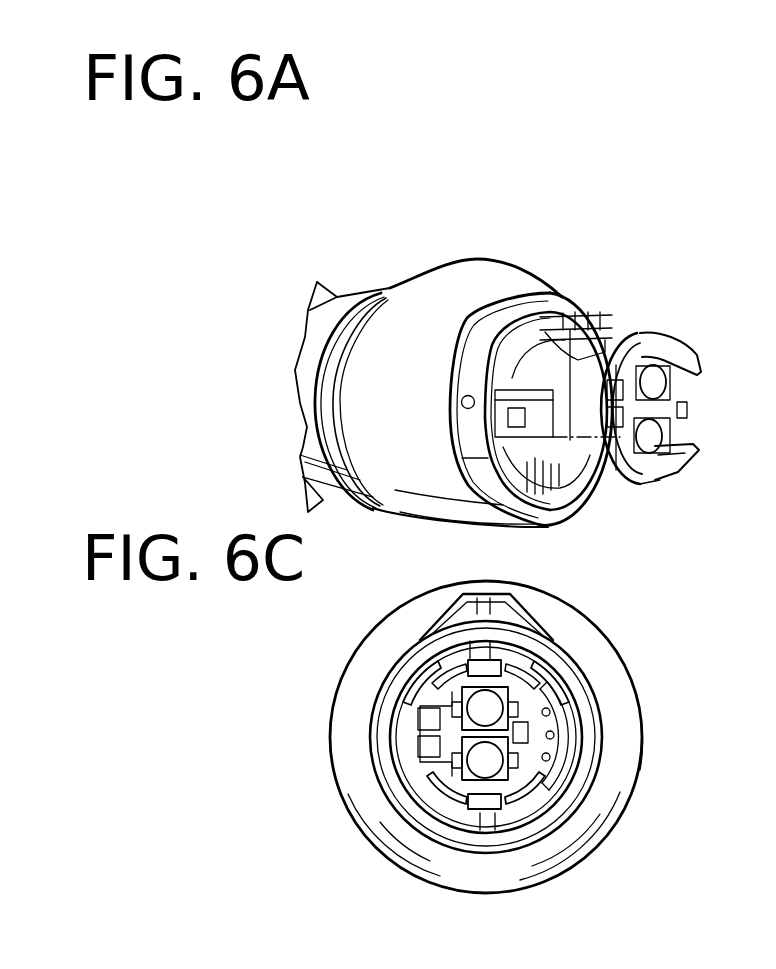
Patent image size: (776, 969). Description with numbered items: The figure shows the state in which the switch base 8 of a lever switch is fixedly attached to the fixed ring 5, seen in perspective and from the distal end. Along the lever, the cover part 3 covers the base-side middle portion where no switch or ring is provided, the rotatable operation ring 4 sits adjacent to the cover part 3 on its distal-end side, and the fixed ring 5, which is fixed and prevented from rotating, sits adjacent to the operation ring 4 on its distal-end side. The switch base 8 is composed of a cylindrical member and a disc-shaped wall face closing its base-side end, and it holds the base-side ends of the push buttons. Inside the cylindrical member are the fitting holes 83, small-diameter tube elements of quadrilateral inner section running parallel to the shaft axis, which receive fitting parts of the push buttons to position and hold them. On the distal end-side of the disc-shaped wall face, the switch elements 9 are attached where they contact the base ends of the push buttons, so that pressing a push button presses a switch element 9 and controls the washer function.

In FIG. 6A, the cover part 3 is at (333, 313).
In FIG. 6C, the cover part 3 is at (617, 697).
In FIG. 6A, the operation ring 4 is at (455, 280).
In FIG. 6C, the operation ring 4 is at (513, 610).
In FIG. 6A, the fixed ring 5 is at (572, 516).
In FIG. 6C, the fixed ring 5 is at (588, 760).
In FIG. 6A, the switch base 8 is at (652, 342).
In FIG. 6A, the switch element 9 is at (655, 382).
In FIG. 6C, the switch element 9 is at (487, 710).
In FIG. 6C, the fitting hole 83 is at (417, 705).